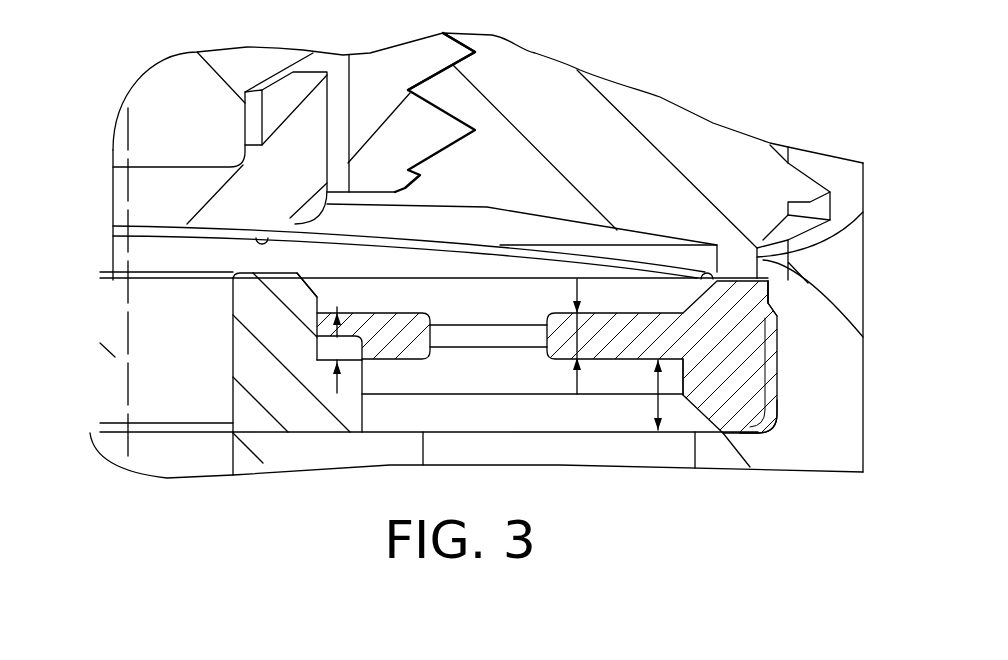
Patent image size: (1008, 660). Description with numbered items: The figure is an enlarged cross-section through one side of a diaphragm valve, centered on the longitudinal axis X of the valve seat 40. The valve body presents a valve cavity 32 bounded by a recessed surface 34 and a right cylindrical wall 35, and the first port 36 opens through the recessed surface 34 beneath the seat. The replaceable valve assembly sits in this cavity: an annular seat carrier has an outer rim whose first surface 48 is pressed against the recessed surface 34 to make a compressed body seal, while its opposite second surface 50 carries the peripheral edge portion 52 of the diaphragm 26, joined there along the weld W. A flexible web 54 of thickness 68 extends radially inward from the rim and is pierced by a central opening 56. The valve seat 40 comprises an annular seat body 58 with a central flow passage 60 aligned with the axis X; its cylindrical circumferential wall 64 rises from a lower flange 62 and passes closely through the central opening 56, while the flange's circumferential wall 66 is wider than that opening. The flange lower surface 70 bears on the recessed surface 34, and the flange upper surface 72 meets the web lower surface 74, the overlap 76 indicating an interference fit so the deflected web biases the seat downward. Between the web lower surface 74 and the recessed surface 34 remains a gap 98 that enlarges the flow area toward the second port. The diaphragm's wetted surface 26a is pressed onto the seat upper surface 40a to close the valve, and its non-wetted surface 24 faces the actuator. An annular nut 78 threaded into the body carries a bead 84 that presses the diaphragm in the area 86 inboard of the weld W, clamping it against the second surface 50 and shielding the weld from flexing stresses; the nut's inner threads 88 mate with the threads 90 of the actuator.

The longitudinal axis X is at (128, 150).
The non-wetted surface 24 is at (541, 258).
The diaphragm 26 is at (466, 210).
The wetted surface 26a is at (254, 236).
The valve cavity 32 is at (777, 413).
The recessed surface 34 is at (747, 433).
The right cylindrical wall 35 is at (773, 383).
The first port 36 is at (177, 433).
The valve seat 40 is at (287, 281).
The upper surface 40a is at (260, 267).
The first surface 48 is at (723, 440).
The second surface 50 is at (690, 283).
The peripheral edge portion 52 is at (788, 263).
The web 54 is at (410, 320).
The central opening 56 is at (313, 327).
The seat body 58 is at (310, 413).
The central flow passage 60 is at (105, 352).
The flange 62 is at (365, 385).
The circumferential wall 64 is at (317, 347).
The circumferential wall 66 is at (365, 415).
The thickness 68 is at (577, 337).
The lower surface 70 is at (267, 433).
The upper surface 72 is at (347, 330).
The lower surface 74 is at (355, 362).
The overlap 76 is at (291, 352).
The nut 78 is at (540, 100).
The bead 84 is at (860, 225).
The contact area 86 is at (748, 295).
The inner threads 88 is at (438, 95).
The threads 90 is at (440, 58).
The gap 98 is at (658, 398).
The weld W is at (784, 297).